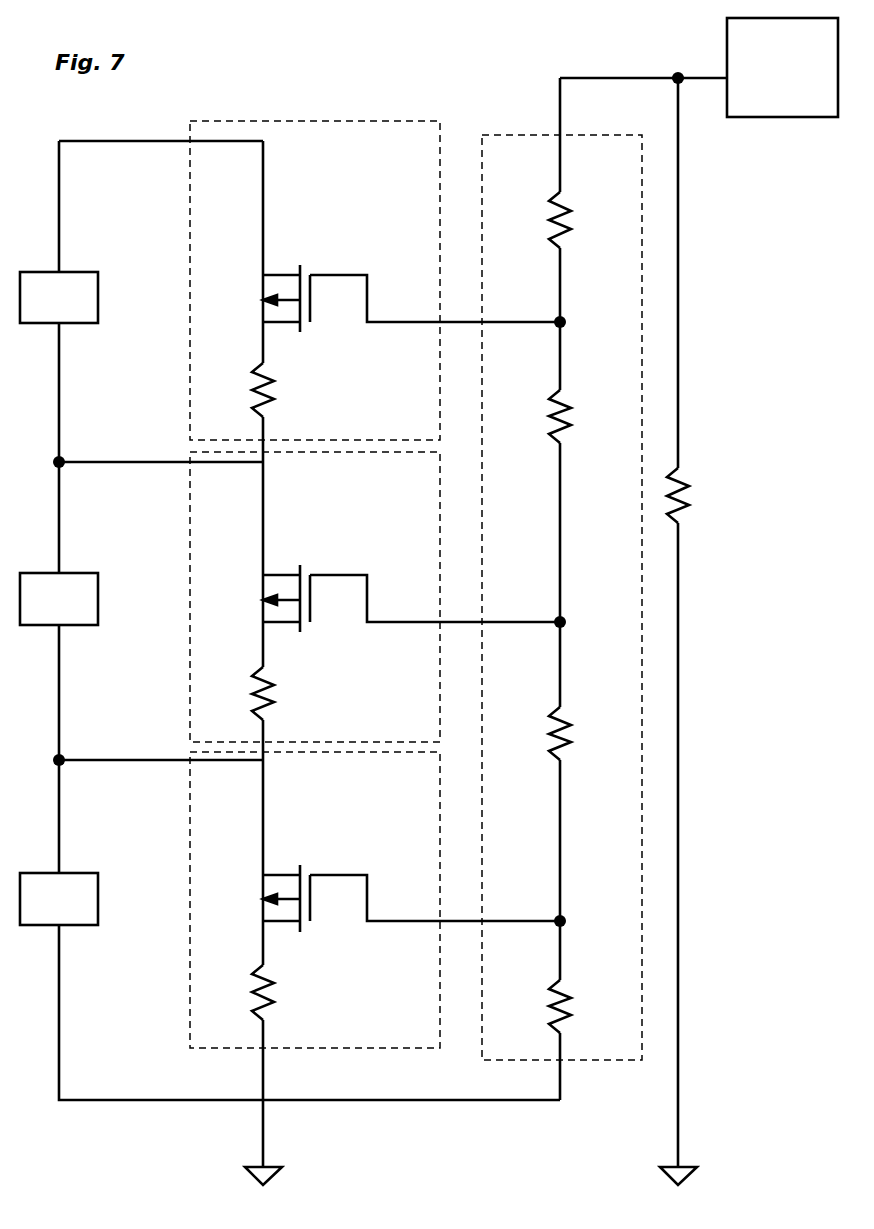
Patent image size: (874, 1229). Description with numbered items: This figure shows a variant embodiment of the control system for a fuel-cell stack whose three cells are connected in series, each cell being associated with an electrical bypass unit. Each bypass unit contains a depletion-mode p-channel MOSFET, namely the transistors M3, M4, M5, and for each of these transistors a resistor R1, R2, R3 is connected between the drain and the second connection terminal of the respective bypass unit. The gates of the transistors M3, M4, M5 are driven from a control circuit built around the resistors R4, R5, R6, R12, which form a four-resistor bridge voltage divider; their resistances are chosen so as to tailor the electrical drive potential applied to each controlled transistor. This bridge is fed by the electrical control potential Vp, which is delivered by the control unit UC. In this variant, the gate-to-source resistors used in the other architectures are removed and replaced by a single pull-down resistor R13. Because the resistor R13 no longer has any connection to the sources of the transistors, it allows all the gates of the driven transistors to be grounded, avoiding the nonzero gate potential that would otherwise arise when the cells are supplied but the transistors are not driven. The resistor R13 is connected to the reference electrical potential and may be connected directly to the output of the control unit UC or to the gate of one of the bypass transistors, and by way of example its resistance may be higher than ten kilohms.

The depletion-mode p-channel MOSFET M3 is at (392, 898).
The depletion-mode p-channel MOSFET M4 is at (391, 598).
The depletion-mode p-channel MOSFET M5 is at (390, 298).
The resistor R1 is at (279, 992).
The resistor R2 is at (281, 693).
The resistor R3 is at (280, 390).
The resistor R4 is at (576, 1006).
The resistor R5 is at (578, 733).
The resistor R6 is at (578, 416).
The resistor R12 is at (580, 220).
The pull-down resistor R13 is at (700, 495).
The electrical control potential Vp is at (690, 61).
The control unit UC is at (782, 67).